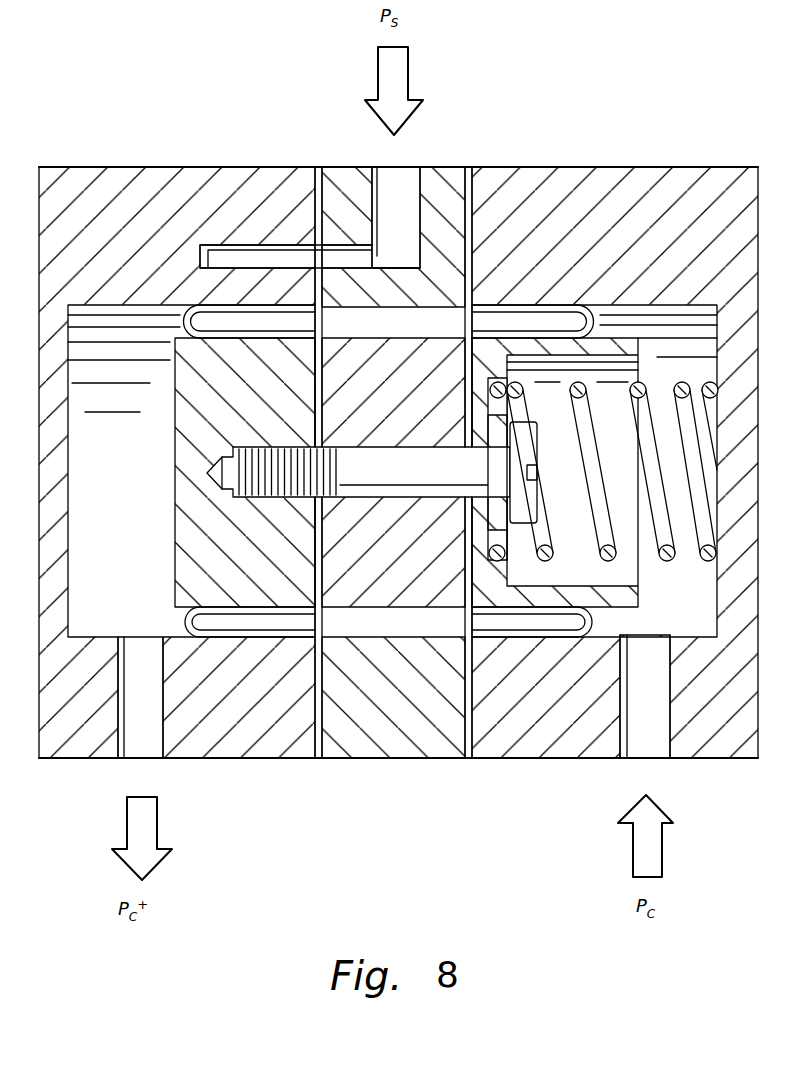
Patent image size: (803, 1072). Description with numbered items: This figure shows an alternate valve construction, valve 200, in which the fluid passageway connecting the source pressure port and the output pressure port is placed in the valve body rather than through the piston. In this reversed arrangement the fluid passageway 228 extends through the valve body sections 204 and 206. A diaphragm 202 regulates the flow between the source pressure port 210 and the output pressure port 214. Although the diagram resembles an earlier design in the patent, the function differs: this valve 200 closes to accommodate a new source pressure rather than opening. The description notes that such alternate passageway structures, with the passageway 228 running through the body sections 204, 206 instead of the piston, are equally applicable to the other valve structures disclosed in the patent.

The valve 200 is at (240, 163).
The diaphragm 202 is at (185, 618).
The valve body section 204 is at (72, 167).
The valve body section 206 is at (342, 167).
The source pressure port 210 is at (400, 167).
The output pressure port 214 is at (152, 750).
The fluid passageway 228 is at (240, 246).